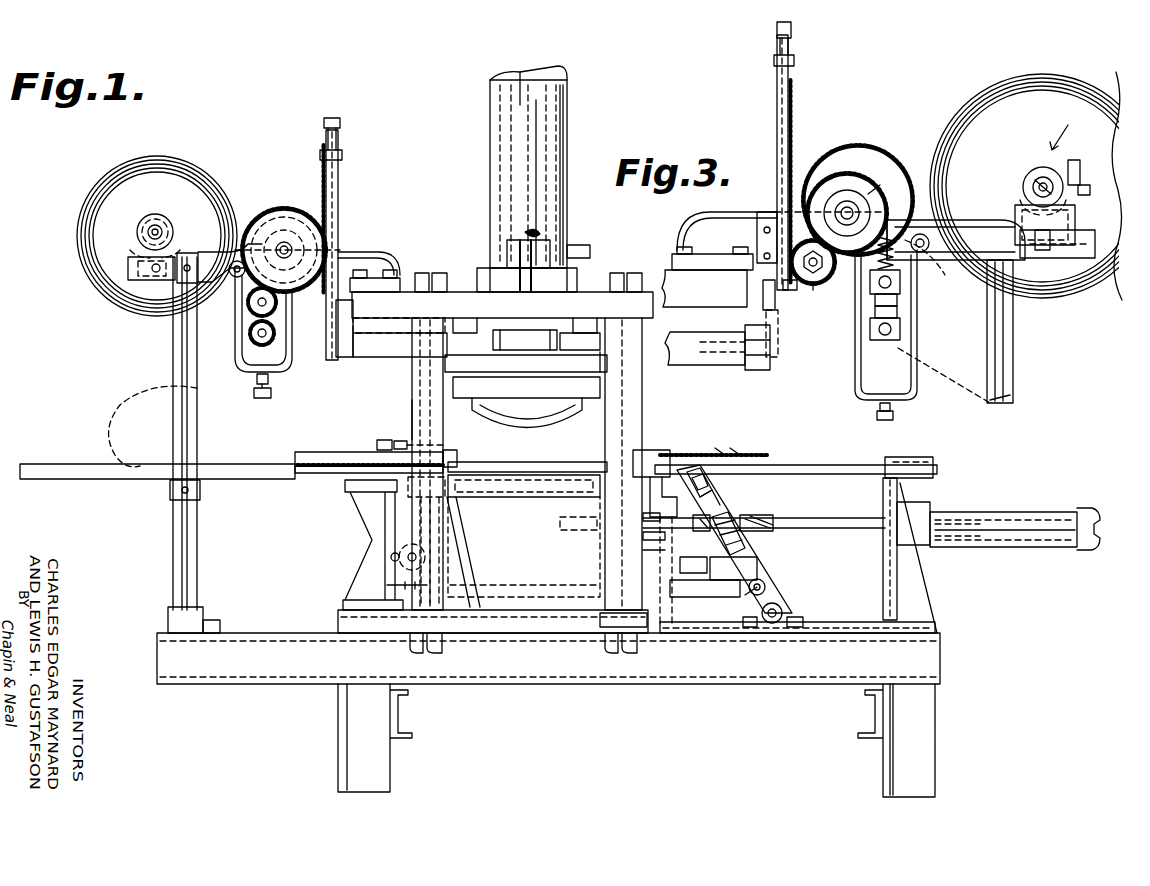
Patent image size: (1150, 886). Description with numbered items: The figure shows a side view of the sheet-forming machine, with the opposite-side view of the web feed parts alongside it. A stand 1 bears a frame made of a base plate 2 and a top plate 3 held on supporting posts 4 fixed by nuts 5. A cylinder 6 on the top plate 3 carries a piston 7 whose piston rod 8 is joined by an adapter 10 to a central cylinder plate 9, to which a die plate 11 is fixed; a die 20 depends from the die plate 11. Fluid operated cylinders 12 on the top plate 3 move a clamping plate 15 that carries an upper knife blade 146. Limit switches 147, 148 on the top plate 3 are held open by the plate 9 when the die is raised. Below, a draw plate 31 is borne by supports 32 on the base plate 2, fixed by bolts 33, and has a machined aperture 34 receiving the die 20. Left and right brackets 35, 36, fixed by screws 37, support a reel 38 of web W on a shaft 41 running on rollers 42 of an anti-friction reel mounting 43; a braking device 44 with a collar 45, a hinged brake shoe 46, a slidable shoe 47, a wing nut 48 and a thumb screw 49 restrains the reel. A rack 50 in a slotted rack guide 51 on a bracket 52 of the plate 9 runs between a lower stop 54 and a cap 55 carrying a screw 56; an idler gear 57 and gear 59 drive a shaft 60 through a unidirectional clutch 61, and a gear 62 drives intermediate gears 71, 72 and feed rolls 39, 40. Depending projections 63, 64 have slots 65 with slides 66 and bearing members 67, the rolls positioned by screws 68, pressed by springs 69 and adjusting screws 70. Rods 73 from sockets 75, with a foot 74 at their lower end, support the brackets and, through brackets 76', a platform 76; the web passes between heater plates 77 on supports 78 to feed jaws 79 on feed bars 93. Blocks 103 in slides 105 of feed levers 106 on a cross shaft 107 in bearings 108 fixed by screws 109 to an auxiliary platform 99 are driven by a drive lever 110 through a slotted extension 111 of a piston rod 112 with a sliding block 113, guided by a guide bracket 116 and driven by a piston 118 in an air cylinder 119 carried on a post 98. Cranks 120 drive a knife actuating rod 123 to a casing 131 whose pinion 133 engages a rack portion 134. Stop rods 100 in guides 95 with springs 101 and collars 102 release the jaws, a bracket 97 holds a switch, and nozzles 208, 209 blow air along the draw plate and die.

In FIG. 1, the stand 1 is at (545, 672).
In FIG. 1, the base plate 2 is at (520, 622).
In FIG. 1, the top plate 3 is at (590, 253).
In FIG. 3, the top plate 3 is at (704, 288).
In FIG. 1, the supporting posts 4 is at (428, 408).
In FIG. 1, the nuts 5 is at (432, 273).
In FIG. 1, the cylinder 6 is at (567, 136).
In FIG. 1, the piston 7 is at (545, 110).
In FIG. 1, the piston rod 8 is at (555, 200).
In FIG. 1, the central cylinder plate 9 is at (380, 357).
In FIG. 3, the central cylinder plate 9 is at (705, 335).
In FIG. 1, the adapter 10 is at (500, 336).
In FIG. 1, the die plate 11 is at (600, 340).
In FIG. 1, the fluid operated cylinders 12 is at (548, 262).
In FIG. 1, the clamping plate 15 is at (526, 387).
In FIG. 1, the die 20 is at (528, 418).
In FIG. 1, the draw plate 31 is at (510, 492).
In FIG. 1, the supports 32 is at (523, 552).
In FIG. 1, the bolts 33 is at (565, 520).
In FIG. 1, the machined aperture 34 is at (442, 515).
In FIG. 3, the left bracket 35 is at (722, 212).
In FIG. 1, the right bracket 36 is at (360, 252).
In FIG. 1, the screws 37 is at (385, 272).
In FIG. 3, the screws 37 is at (686, 247).
In FIG. 1, the reel 38 is at (165, 170).
In FIG. 3, the reel 38 is at (978, 100).
In FIG. 3, the feed roll 39 is at (900, 312).
In FIG. 3, the feed roll 40 is at (900, 330).
In FIG. 1, the shaft 41 is at (157, 230).
In FIG. 3, the shaft 41 is at (1040, 185).
In FIG. 1, the rollers 42 is at (135, 240).
In FIG. 3, the rollers 42 is at (1020, 192).
In FIG. 1, the anti-friction reel mounting 43 is at (130, 268).
In FIG. 3, the anti-friction reel mounting 43 is at (1018, 220).
In FIG. 3, the braking device 44 is at (1063, 127).
In FIG. 3, the collar 45 is at (1043, 178).
In FIG. 3, the hinged brake shoe 46 is at (1078, 165).
In FIG. 3, the slidable shoe 47 is at (1095, 245).
In FIG. 3, the wing nut 48 is at (1094, 192).
In FIG. 3, the thumb screw 49 is at (1045, 258).
In FIG. 1, the rack 50 is at (322, 195).
In FIG. 3, the rack 50 is at (794, 118).
In FIG. 1, the slotted rack guide 51 is at (338, 160).
In FIG. 3, the slotted rack guide 51 is at (777, 93).
In FIG. 1, the bracket 52 is at (336, 350).
In FIG. 3, the bracket 52 is at (772, 360).
In FIG. 3, the lower stop 54 is at (797, 290).
In FIG. 1, the cap 55 is at (342, 155).
In FIG. 3, the cap 55 is at (774, 60).
In FIG. 1, the screw 56 is at (324, 124).
In FIG. 3, the screw 56 is at (794, 55).
In FIG. 3, the idler gear 57 is at (820, 282).
In FIG. 1, the gear 59 is at (262, 232).
In FIG. 3, the gear 59 is at (868, 192).
In FIG. 1, the shaft 60 is at (280, 242).
In FIG. 3, the shaft 60 is at (848, 205).
In FIG. 3, the unidirectional clutch 61 is at (835, 200).
In FIG. 1, the gear 62 is at (286, 210).
In FIG. 3, the gear 62 is at (880, 180).
In FIG. 3, the depending projection 63 is at (918, 395).
In FIG. 1, the depending projection 64 is at (242, 370).
In FIG. 1, the slots 65 is at (229, 270).
In FIG. 3, the slots 65 is at (836, 262).
In FIG. 3, the slides 66 is at (875, 268).
In FIG. 3, the slidable bearing members 67 is at (872, 298).
In FIG. 1, the screws 68 is at (262, 398).
In FIG. 3, the screws 68 is at (878, 410).
In FIG. 3, the springs 69 is at (935, 270).
In FIG. 3, the adjusting screws 70 is at (900, 205).
In FIG. 1, the intermediate gear 71 is at (240, 310).
In FIG. 1, the intermediate gear 72 is at (248, 308).
In FIG. 1, the rods 73 is at (178, 543).
In FIG. 1, the post foot 74 is at (200, 610).
In FIG. 1, the sockets 75 is at (187, 283).
In FIG. 3, the sockets 75 is at (956, 240).
In FIG. 1, the platform 76 is at (157, 488).
In FIG. 1, the brackets 76' is at (205, 495).
In FIG. 1, the heater plates 77 is at (316, 452).
In FIG. 1, the supports 78 is at (362, 525).
In FIG. 1, the feed jaws 79 is at (452, 450).
In FIG. 1, the feed bars 93 is at (597, 462).
In FIG. 1, the guides 95 is at (697, 450).
In FIG. 1, the bracket 97 is at (665, 550).
In FIG. 1, the post 98 is at (885, 562).
In FIG. 1, the auxiliary platform 99 is at (820, 628).
In FIG. 1, the stop rods 100 is at (655, 450).
In FIG. 1, the springs 101 is at (735, 449).
In FIG. 1, the collars 102 is at (720, 448).
In FIG. 1, the blocks 103 is at (705, 472).
In FIG. 1, the slides 105 is at (712, 484).
In FIG. 1, the feed levers 106 is at (722, 500).
In FIG. 1, the cross shaft 107 is at (770, 623).
In FIG. 1, the bearings 108 is at (766, 588).
In FIG. 1, the screws 109 is at (795, 617).
In FIG. 1, the drive lever 110 is at (760, 540).
In FIG. 1, the slotted extension 111 is at (660, 515).
In FIG. 1, the piston rod 112 is at (840, 518).
In FIG. 1, the sliding block 113 is at (715, 530).
In FIG. 1, the guide bracket 116 is at (665, 535).
In FIG. 1, the piston 118 is at (950, 515).
In FIG. 1, the air cylinder 119 is at (1030, 512).
In FIG. 1, the cranks 120 is at (760, 582).
In FIG. 1, the knife actuating rod 123 is at (555, 582).
In FIG. 1, the casing 131 is at (426, 557).
In FIG. 1, the pinion 133 is at (680, 565).
In FIG. 1, the rack portion 134 is at (710, 590).
In FIG. 1, the upper knife blade 146 is at (445, 365).
In FIG. 1, the limit switch 147 is at (502, 451).
In FIG. 1, the limit switch 148 is at (600, 360).
In FIG. 1, the air nozzle 208 is at (396, 440).
In FIG. 1, the nozzle 209 is at (399, 326).
In FIG. 1, the web W is at (150, 388).
In FIG. 3, the web W is at (945, 358).